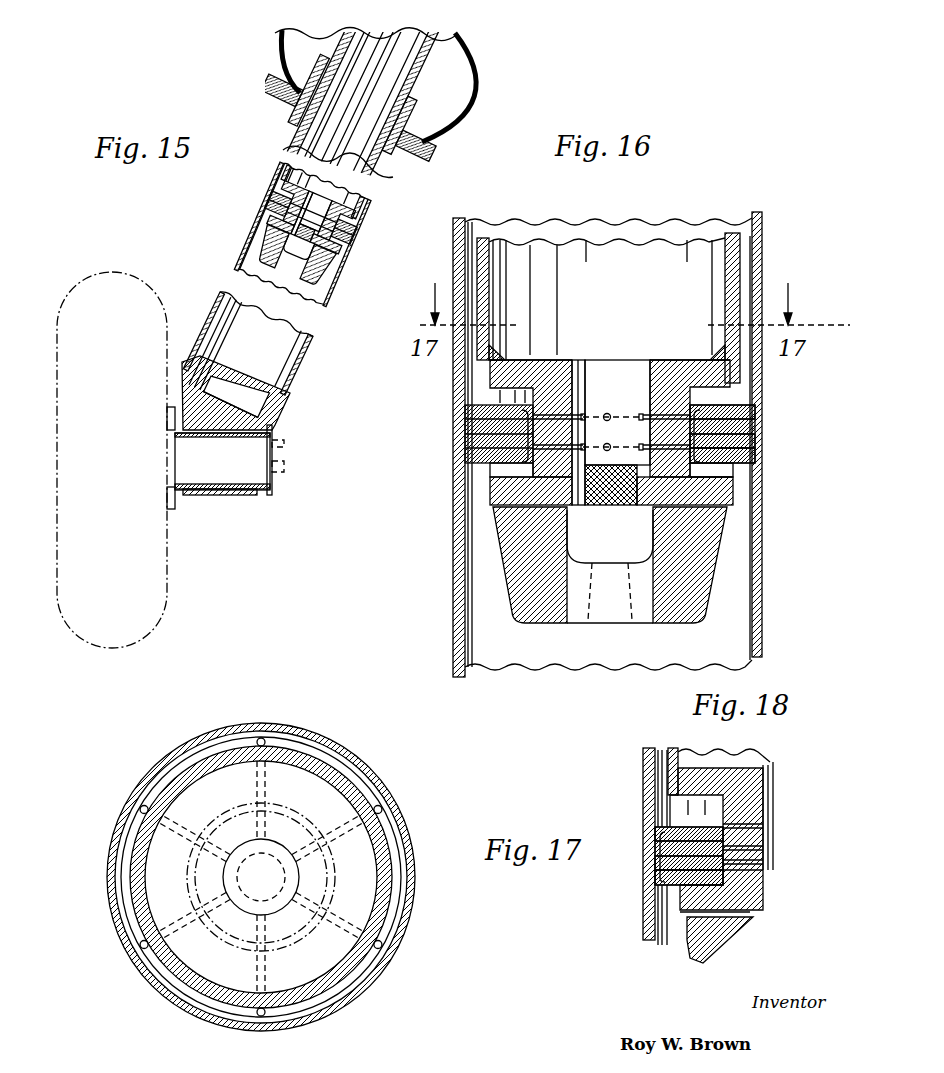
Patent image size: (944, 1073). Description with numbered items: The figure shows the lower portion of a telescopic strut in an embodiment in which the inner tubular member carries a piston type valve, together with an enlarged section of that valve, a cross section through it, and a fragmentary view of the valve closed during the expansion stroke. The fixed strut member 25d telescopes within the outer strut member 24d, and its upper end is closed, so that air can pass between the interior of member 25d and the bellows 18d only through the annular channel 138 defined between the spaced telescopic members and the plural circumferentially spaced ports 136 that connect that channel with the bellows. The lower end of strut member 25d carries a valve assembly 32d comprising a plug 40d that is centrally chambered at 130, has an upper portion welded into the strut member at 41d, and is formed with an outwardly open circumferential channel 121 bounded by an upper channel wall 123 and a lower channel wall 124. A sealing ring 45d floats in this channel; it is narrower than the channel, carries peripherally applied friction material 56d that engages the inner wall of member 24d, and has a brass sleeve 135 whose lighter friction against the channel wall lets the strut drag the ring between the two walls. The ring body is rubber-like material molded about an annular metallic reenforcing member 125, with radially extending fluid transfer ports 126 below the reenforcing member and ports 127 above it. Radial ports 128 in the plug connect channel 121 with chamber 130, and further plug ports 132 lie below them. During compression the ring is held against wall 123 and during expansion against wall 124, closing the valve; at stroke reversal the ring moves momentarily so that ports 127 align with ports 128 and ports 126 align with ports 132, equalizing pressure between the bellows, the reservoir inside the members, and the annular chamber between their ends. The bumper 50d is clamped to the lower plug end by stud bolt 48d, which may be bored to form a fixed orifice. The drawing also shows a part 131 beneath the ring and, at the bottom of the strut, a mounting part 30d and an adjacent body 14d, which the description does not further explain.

In FIG. 15, the tank 14d is at (160, 570).
In FIG. 15, the mounting flange nozzle 30d is at (249, 478).
In FIG. 15, the bumper 50d is at (314, 310).
In FIG. 16, the bumper 50d is at (720, 570).
In FIG. 18, the bumper 50d is at (752, 930).
In FIG. 15, the strut member 24d is at (372, 205).
In FIG. 16, the strut member 24d is at (760, 262).
In FIG. 17, the strut member 24d is at (332, 738).
In FIG. 18, the strut member 24d is at (641, 752).
In FIG. 15, the fixed strut member 25d is at (370, 190).
In FIG. 16, the fixed strut member 25d is at (742, 240).
In FIG. 17, the fixed strut member 25d is at (353, 780).
In FIG. 18, the fixed strut member 25d is at (676, 747).
In FIG. 15, the valve assembly 32d is at (354, 206).
In FIG. 16, the valve assembly 32d is at (640, 358).
In FIG. 18, the valve assembly 32d is at (742, 761).
In FIG. 15, the ports 136 is at (325, 108).
In FIG. 15, the annular channel 138 is at (306, 138).
In FIG. 15, the bellows 18d is at (476, 96).
In FIG. 16, the plug 40d is at (535, 372).
In FIG. 17, the plug 40d is at (212, 787).
In FIG. 16, the weld 41d is at (500, 356).
In FIG. 16, the chamber 130 is at (578, 393).
In FIG. 17, the chamber 130 is at (278, 845).
In FIG. 16, the ports 128 is at (606, 413).
In FIG. 18, the ports 128 is at (765, 827).
In FIG. 16, the plug ports 132 is at (607, 444).
In FIG. 18, the plug ports 132 is at (765, 863).
In FIG. 16, the upper channel wall 123 is at (703, 372).
In FIG. 16, the ports 127 is at (716, 395).
In FIG. 17, the ports 127 is at (385, 940).
In FIG. 18, the ports 127 is at (655, 838).
In FIG. 16, the sealing ring 45d is at (756, 408).
In FIG. 18, the sealing ring 45d is at (657, 876).
In FIG. 16, the reenforcing member 125 is at (757, 410).
In FIG. 18, the reenforcing member 125 is at (657, 862).
In FIG. 16, the fluid transfer ports 126 is at (757, 432).
In FIG. 18, the fluid transfer ports 126 is at (672, 886).
In FIG. 16, the friction material 56d is at (487, 414).
In FIG. 18, the friction material 56d is at (656, 848).
In FIG. 16, the follower 131 is at (492, 471).
In FIG. 18, the follower 131 is at (745, 872).
In FIG. 16, the channel 121 is at (730, 468).
In FIG. 16, the lower channel wall 124 is at (745, 482).
In FIG. 16, the stud bolt 48d is at (640, 482).
In FIG. 18, the brass sleeve 135 is at (765, 850).